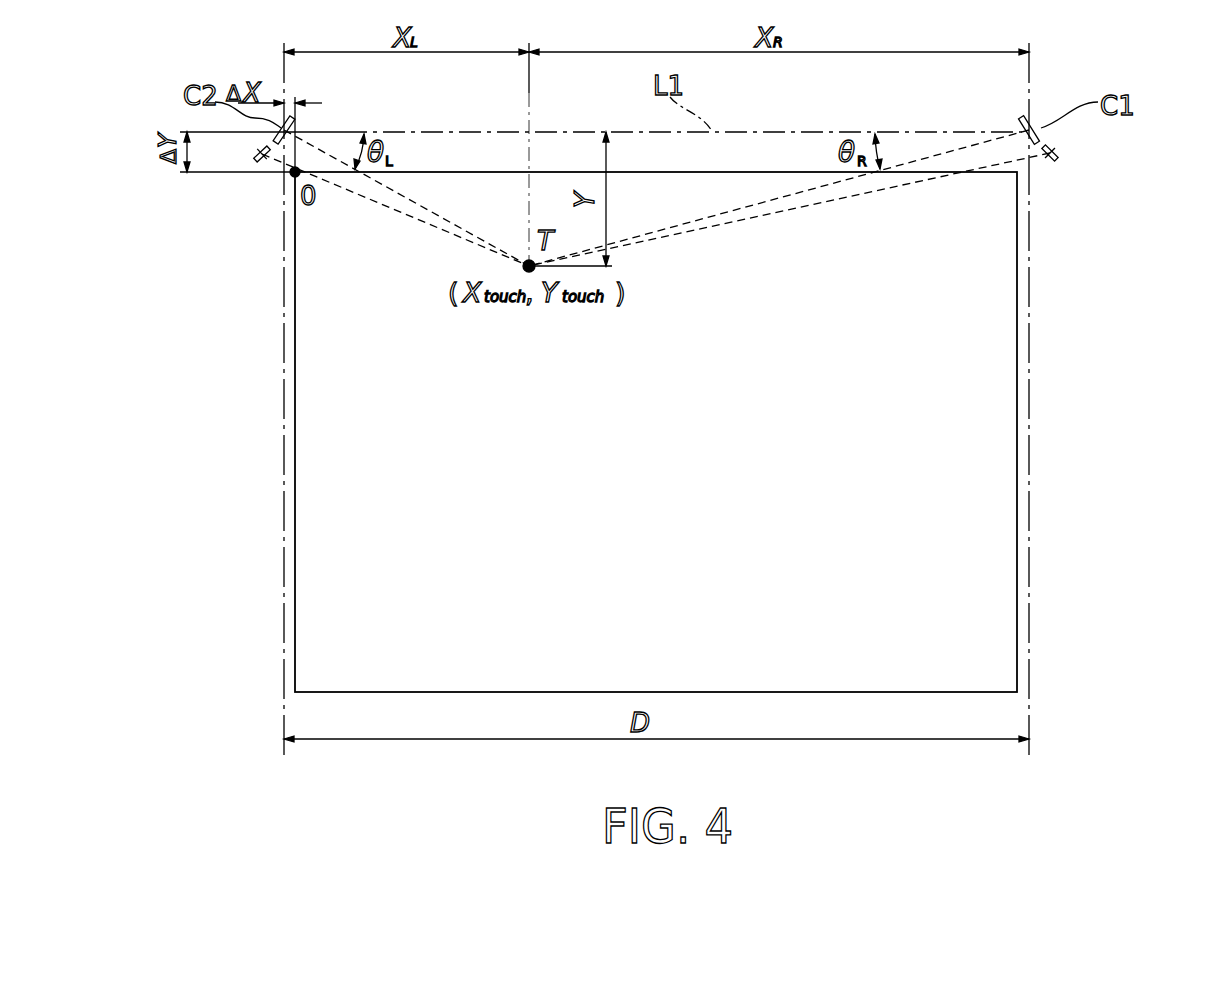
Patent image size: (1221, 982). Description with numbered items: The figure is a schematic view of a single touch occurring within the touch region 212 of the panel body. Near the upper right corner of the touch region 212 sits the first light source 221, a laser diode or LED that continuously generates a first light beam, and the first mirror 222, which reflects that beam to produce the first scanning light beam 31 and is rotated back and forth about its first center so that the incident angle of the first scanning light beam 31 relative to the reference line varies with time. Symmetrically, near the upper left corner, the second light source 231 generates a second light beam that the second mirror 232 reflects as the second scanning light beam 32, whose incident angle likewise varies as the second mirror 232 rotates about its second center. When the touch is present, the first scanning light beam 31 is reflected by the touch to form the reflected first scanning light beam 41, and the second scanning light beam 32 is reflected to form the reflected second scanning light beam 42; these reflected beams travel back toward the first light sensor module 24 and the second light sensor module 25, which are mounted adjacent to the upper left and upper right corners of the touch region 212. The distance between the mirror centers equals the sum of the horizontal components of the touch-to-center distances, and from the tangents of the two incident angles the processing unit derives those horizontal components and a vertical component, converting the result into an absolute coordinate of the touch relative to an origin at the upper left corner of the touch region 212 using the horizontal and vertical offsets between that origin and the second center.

The touch region 212 is at (997, 477).
The first light source 221 is at (983, 131).
The first mirror 222 is at (1023, 126).
The second light source 231 is at (330, 132).
The second mirror 232 is at (296, 126).
The first light sensor module 24 is at (255, 153).
The second light sensor module 25 is at (1060, 154).
The first scanning light beam 31 is at (697, 222).
The second scanning light beam 32 is at (446, 213).
The reflected first scanning light beam 41 is at (408, 219).
The reflected second scanning light beam 42 is at (761, 222).